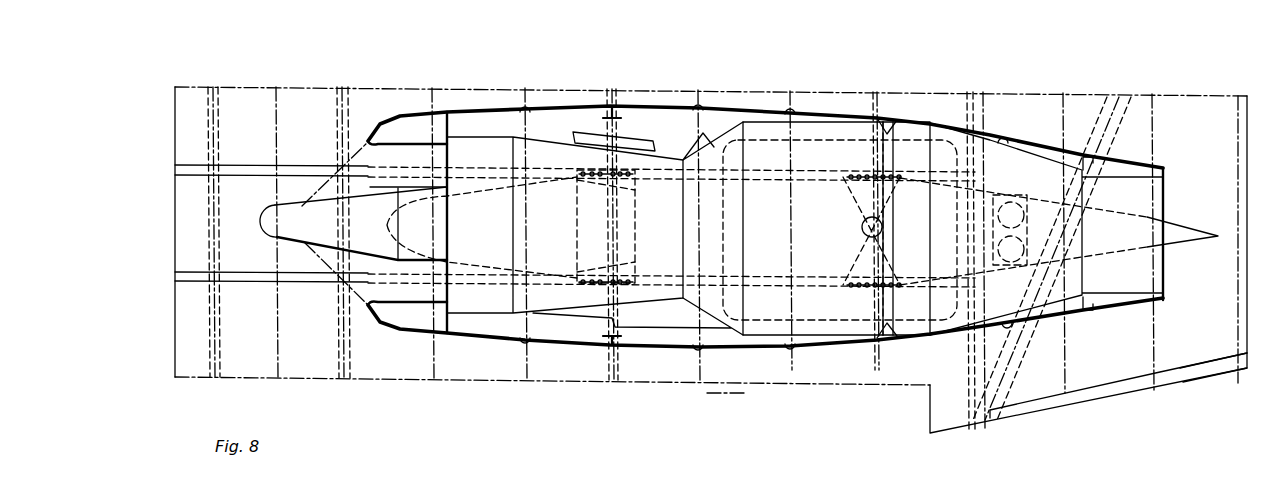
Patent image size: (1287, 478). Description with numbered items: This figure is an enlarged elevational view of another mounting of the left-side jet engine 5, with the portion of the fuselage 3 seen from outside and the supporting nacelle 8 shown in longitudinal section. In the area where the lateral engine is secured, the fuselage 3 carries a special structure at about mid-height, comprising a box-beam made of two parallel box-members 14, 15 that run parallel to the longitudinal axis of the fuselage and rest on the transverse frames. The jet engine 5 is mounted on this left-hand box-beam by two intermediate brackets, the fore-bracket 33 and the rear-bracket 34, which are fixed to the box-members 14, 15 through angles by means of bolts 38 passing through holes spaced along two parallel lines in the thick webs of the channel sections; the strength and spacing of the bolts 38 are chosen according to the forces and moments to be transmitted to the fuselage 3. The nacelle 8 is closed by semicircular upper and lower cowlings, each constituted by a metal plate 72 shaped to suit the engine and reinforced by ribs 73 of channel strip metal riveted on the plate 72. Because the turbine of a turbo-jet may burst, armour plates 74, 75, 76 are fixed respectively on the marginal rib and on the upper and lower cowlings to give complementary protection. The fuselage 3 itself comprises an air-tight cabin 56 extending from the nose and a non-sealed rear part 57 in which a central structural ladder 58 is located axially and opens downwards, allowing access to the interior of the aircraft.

The fuselage 3 is at (311, 368).
The jet engine 5 is at (280, 232).
The supporting nacelle 8 is at (748, 350).
The box-member 14 is at (239, 276).
The box-member 15 is at (231, 170).
The fore-bracket 33 is at (620, 220).
The rear-bracket 34 is at (892, 229).
The bolt 38 is at (583, 172).
The air-tight cabin 56 is at (922, 372).
The non-sealed rear part 57 is at (1187, 364).
The central structural ladder 58 is at (1093, 397).
The metal plate 72 is at (747, 108).
The rib 73 is at (711, 120).
The armour plate 74 is at (748, 208).
The armour plate 75 is at (833, 137).
The armour plate 76 is at (698, 313).